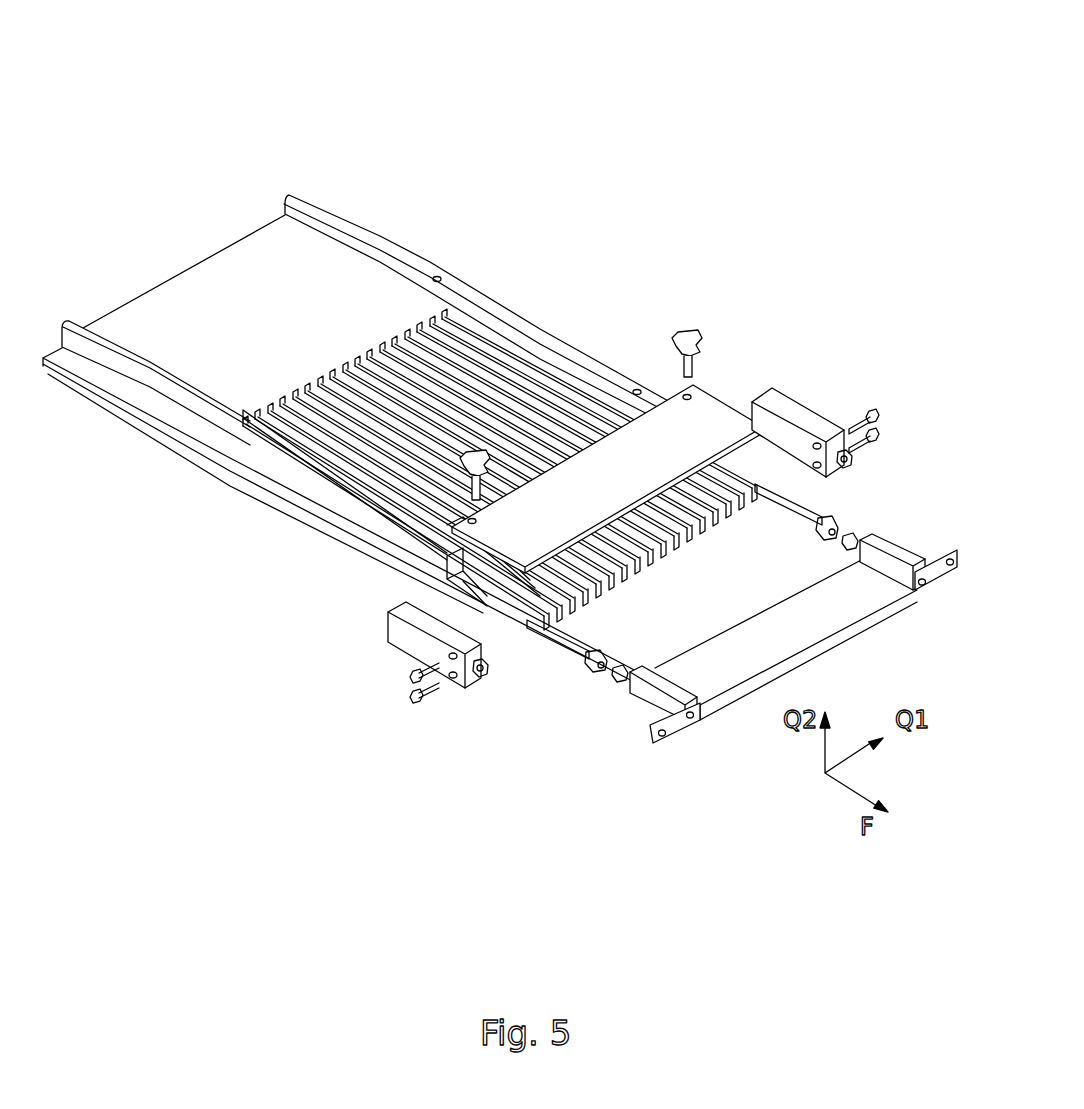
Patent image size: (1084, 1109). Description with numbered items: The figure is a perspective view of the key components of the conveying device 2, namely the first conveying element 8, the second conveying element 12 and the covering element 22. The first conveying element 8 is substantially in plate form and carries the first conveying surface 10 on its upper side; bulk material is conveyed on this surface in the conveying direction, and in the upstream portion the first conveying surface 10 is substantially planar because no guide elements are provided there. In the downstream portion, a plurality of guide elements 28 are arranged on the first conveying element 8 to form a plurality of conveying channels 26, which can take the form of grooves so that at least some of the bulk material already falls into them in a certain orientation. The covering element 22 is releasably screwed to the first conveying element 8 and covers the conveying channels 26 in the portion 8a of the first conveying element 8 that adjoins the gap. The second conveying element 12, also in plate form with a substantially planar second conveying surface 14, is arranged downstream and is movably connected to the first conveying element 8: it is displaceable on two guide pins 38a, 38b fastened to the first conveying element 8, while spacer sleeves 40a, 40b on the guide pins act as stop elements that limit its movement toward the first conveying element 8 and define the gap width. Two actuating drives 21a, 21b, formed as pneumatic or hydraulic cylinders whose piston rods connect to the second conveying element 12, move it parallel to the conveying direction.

The conveying device 2 is at (643, 123).
The first conveying element 8 is at (137, 414).
The portion of the first conveying element 8a is at (458, 611).
The first conveying surface 10 is at (287, 257).
The second conveying element 12 is at (658, 697).
The second conveying surface 14 is at (732, 670).
The actuating drive 21a is at (403, 640).
The actuating drive 21b is at (779, 409).
The covering element 22 is at (707, 418).
The conveying channels 26 is at (298, 435).
The guide elements 28 is at (446, 346).
The guide pin 38a is at (550, 640).
The guide pin 38b is at (793, 507).
The spacer sleeve 40a is at (590, 663).
The spacer sleeve 40b is at (837, 525).